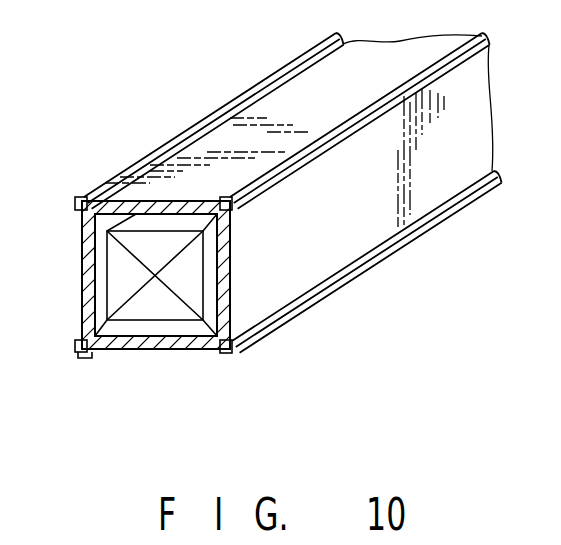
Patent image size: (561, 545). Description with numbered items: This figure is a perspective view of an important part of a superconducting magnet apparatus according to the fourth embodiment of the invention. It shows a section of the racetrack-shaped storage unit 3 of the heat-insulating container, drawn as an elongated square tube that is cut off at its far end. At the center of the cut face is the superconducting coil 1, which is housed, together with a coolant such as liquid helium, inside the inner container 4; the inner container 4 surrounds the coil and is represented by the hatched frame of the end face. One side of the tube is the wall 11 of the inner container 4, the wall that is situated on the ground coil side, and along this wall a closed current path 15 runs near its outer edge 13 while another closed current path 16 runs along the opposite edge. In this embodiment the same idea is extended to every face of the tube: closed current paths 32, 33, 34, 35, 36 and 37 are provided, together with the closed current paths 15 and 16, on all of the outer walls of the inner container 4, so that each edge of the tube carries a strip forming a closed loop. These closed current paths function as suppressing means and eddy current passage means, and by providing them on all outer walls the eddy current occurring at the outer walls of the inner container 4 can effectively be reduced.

The superconducting coil 1 is at (152, 243).
The storage unit 3 is at (148, 331).
The inner container 4 is at (82, 262).
The wall 11 is at (330, 255).
The outer edge 13 is at (225, 142).
The closed current path 15 is at (492, 82).
The closed current path 16 is at (478, 198).
The closed current path 32 is at (327, 125).
The closed current path 33 is at (226, 353).
The closed current path 34 is at (92, 197).
The closed current path 35 is at (84, 356).
The closed current path 36 is at (75, 206).
The closed current path 37 is at (76, 349).